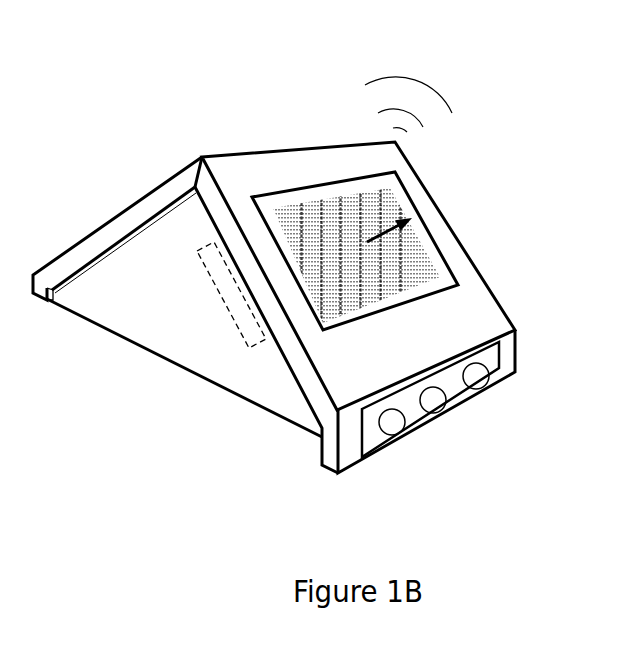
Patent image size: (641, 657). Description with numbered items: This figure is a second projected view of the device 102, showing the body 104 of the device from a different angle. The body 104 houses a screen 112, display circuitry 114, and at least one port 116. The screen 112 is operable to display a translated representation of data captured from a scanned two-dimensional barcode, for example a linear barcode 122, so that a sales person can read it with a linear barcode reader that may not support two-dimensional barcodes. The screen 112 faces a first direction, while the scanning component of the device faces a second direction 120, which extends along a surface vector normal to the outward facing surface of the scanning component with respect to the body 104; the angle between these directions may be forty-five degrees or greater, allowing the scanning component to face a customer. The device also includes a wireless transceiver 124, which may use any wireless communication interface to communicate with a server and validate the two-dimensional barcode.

The device 102 is at (230, 58).
The body 104 is at (202, 157).
The screen 112 is at (433, 245).
The display circuitry 114 is at (229, 328).
The port 116 is at (393, 427).
The second direction 120 is at (412, 240).
The linear barcode 122 is at (460, 287).
The wireless transceiver 124 is at (410, 147).